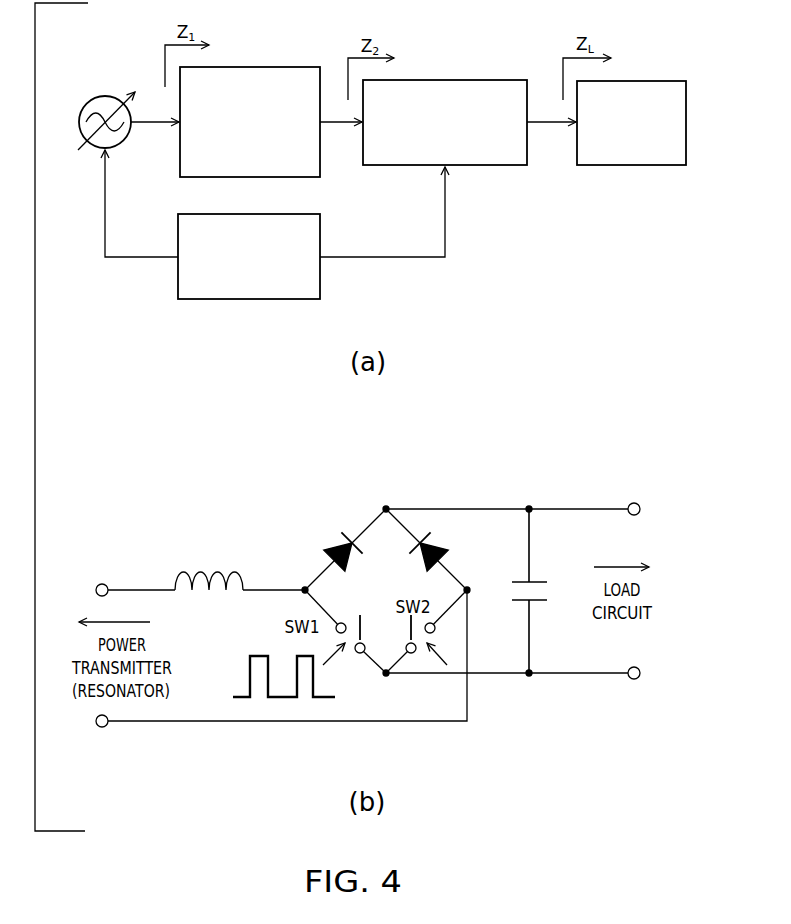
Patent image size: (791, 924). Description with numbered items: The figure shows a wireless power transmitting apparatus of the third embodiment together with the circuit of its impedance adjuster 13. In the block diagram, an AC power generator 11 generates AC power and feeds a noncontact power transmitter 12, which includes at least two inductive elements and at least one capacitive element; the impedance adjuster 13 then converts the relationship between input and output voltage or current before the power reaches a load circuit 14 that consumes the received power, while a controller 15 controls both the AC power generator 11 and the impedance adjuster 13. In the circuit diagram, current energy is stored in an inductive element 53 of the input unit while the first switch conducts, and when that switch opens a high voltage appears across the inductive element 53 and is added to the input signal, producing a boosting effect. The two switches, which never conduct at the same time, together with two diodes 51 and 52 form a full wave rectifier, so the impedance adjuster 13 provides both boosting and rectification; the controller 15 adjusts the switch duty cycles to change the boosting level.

The AC power generator 11 is at (105, 95).
The noncontact power transmitter 12 is at (250, 67).
The impedance adjuster 13 is at (445, 80).
The load circuit 14 is at (632, 81).
The controller 15 is at (250, 299).
The diode 51 is at (338, 546).
The diode 52 is at (437, 541).
The inductive element 53 is at (210, 571).